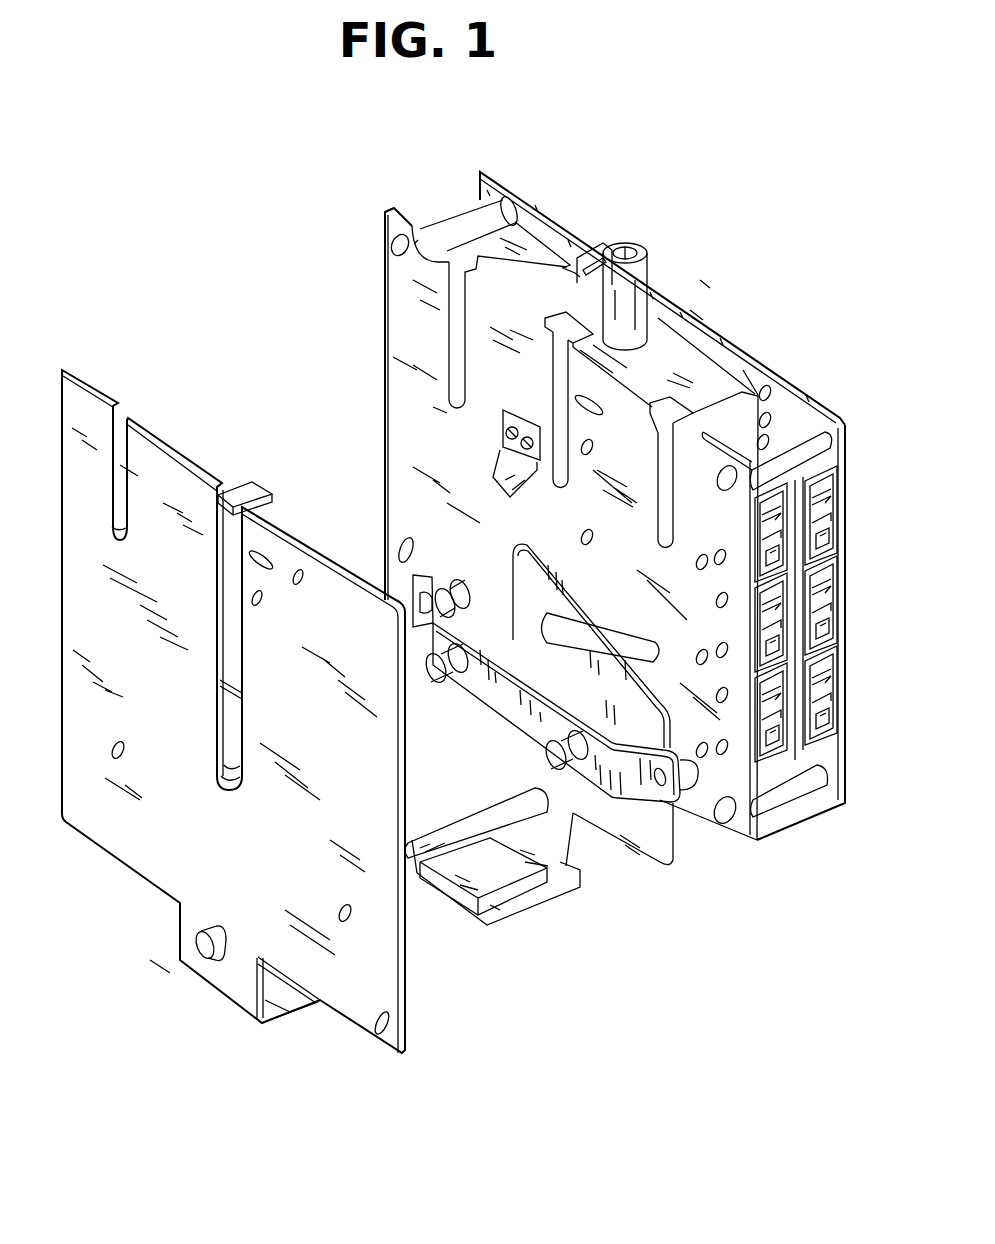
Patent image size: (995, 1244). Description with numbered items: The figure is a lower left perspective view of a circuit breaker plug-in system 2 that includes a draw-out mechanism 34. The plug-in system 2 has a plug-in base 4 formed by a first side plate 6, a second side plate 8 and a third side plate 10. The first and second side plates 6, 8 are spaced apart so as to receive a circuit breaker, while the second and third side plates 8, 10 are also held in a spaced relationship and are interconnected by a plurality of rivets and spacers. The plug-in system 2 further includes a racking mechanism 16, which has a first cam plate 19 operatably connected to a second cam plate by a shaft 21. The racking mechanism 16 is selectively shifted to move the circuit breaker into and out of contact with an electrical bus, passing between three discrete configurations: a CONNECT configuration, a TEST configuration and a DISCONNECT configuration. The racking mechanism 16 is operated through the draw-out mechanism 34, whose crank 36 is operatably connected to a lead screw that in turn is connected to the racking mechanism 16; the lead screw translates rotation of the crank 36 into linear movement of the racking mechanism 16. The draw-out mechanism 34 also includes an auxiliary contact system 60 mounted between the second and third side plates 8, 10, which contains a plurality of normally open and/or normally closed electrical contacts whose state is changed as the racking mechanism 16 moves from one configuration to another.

The circuit breaker plug-in system 2 is at (238, 316).
The plug-in base 4 is at (104, 872).
The first side plate 6 is at (74, 396).
The second side plate 8 is at (386, 286).
The third side plate 10 is at (497, 170).
The racking mechanism 16 is at (712, 866).
The first cam plate 19 is at (527, 558).
The shaft 21 is at (455, 832).
The draw-out mechanism 34 is at (548, 176).
The crank 36 is at (642, 284).
The auxiliary contact system 60 is at (866, 596).